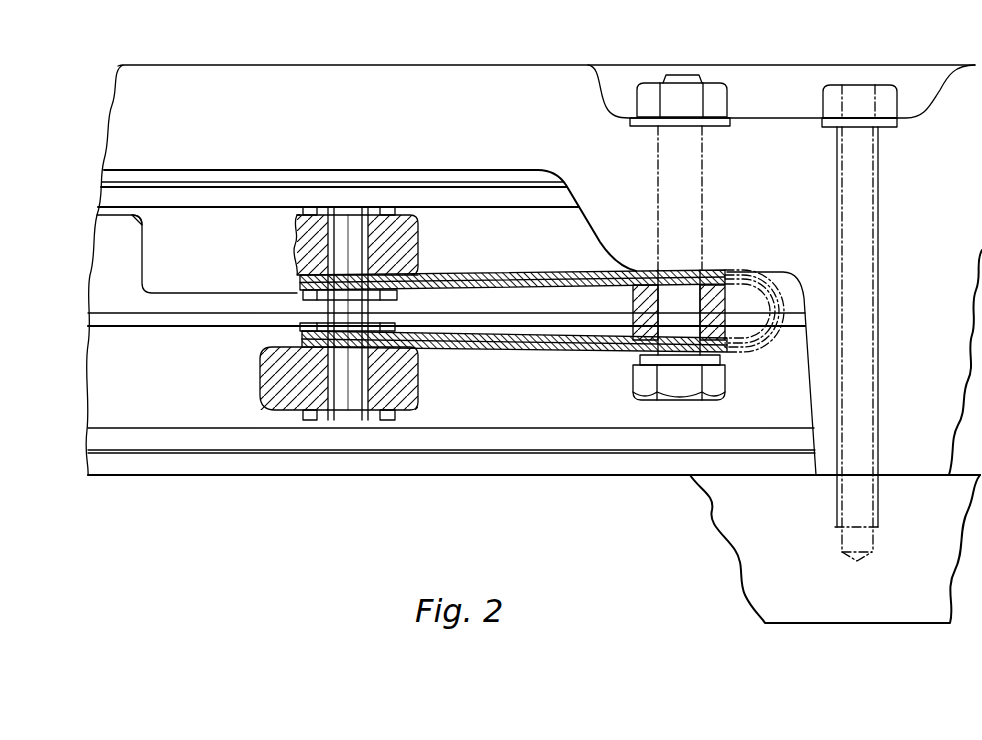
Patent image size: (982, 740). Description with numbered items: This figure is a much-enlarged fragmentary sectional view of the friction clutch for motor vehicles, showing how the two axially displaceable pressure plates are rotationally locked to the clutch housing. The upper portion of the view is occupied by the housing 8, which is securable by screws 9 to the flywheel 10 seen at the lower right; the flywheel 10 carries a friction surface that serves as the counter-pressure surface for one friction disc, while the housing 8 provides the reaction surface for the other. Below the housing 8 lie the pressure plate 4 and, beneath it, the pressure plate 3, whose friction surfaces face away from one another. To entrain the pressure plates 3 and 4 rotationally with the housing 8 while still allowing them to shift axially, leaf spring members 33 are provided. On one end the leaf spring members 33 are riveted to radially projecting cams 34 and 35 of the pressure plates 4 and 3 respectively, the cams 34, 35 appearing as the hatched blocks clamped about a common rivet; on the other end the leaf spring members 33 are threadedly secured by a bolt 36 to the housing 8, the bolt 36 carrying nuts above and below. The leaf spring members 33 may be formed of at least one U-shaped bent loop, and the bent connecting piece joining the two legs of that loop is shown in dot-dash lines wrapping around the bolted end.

The pressure plate 3 is at (140, 413).
The pressure plate 4 is at (155, 233).
The housing 8 is at (333, 85).
The screw 9 is at (860, 90).
The flywheel 10 is at (757, 548).
The leaf spring member 33 is at (498, 273).
The radially projecting cam 34 is at (398, 227).
The radially projecting cam 35 is at (273, 395).
The bolt 36 is at (688, 142).